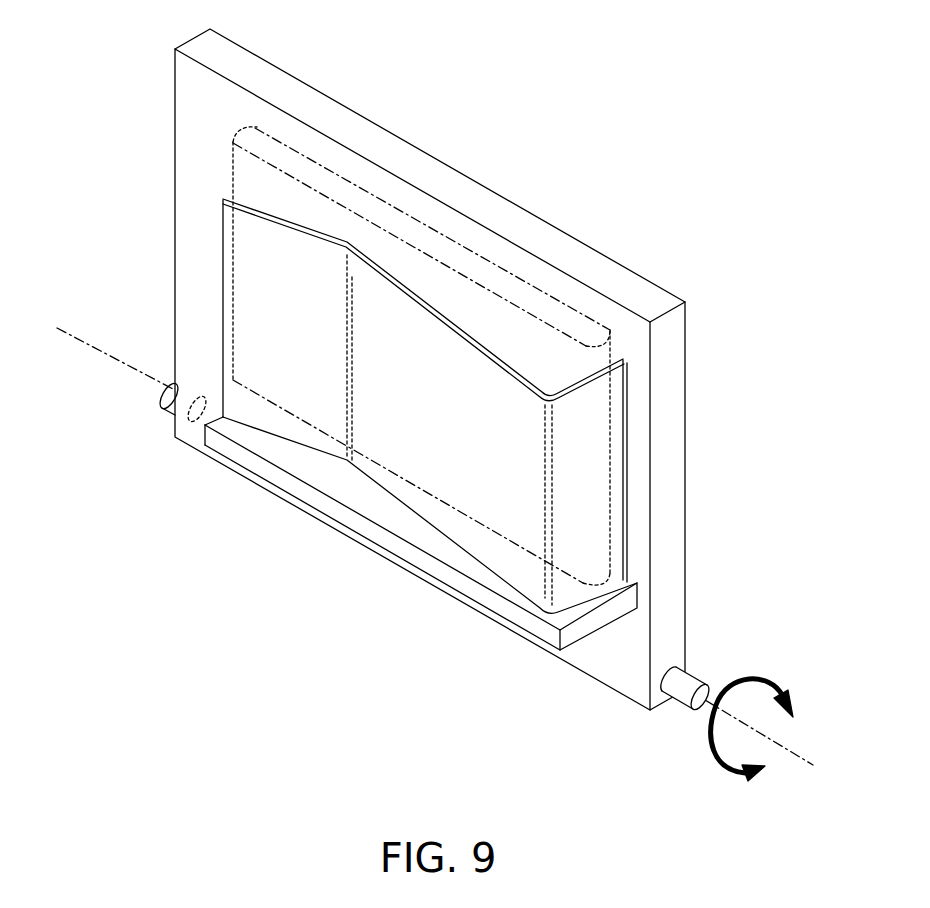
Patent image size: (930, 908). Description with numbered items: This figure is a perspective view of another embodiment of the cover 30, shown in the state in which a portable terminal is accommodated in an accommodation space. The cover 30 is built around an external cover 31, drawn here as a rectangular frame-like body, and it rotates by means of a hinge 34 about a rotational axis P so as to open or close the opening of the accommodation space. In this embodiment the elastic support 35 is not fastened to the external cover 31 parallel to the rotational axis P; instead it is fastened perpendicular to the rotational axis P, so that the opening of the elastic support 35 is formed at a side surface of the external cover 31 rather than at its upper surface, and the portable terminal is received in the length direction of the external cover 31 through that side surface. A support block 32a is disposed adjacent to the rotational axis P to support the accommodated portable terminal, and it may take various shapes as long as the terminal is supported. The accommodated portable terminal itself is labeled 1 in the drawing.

The cover 30 is at (437, 33).
The display panel 1 is at (232, 162).
The external cover 31 is at (597, 252).
The support block 32a is at (423, 562).
The hinge 34 is at (682, 695).
The elastic support 35 is at (490, 530).
The rotational axis P is at (783, 748).